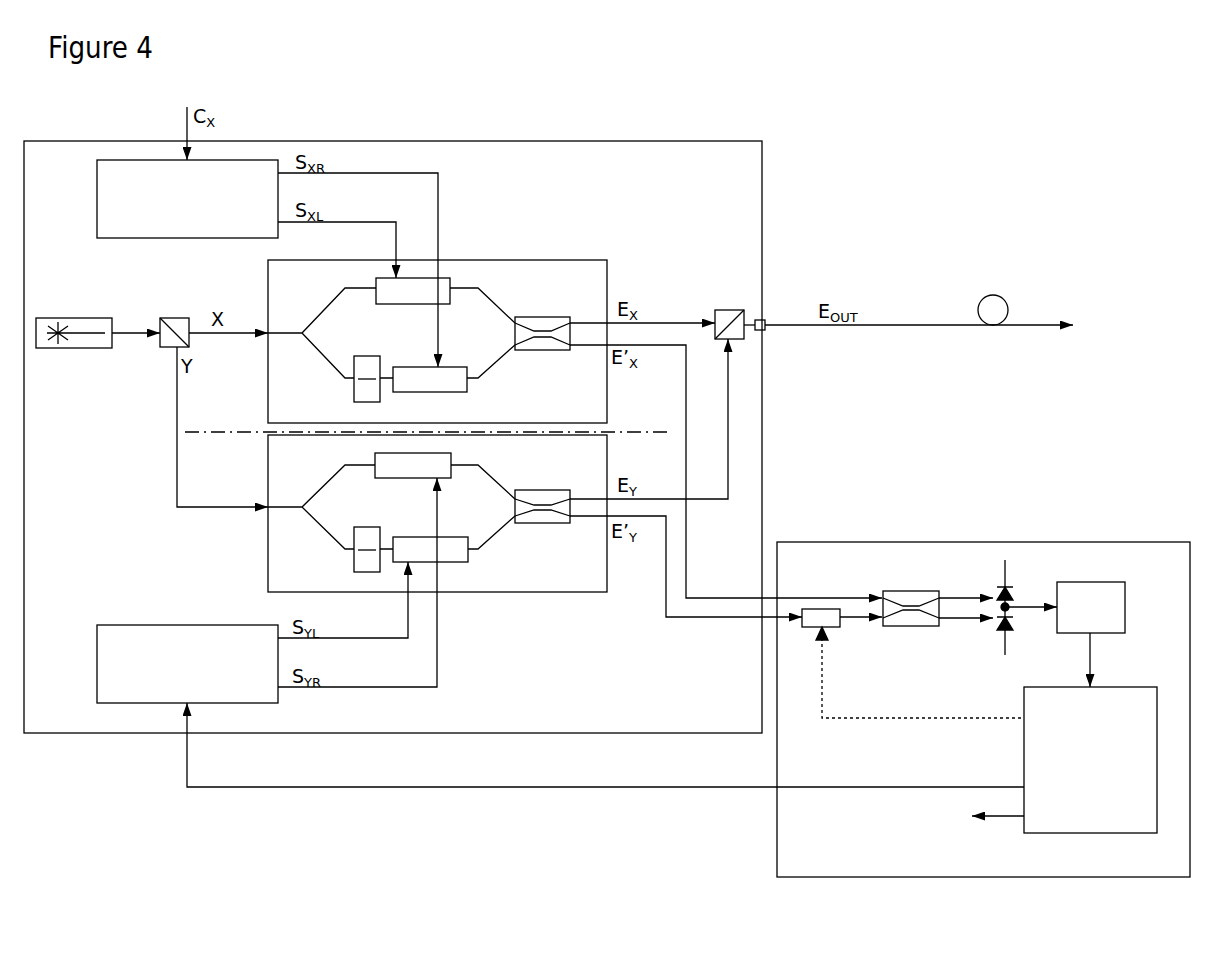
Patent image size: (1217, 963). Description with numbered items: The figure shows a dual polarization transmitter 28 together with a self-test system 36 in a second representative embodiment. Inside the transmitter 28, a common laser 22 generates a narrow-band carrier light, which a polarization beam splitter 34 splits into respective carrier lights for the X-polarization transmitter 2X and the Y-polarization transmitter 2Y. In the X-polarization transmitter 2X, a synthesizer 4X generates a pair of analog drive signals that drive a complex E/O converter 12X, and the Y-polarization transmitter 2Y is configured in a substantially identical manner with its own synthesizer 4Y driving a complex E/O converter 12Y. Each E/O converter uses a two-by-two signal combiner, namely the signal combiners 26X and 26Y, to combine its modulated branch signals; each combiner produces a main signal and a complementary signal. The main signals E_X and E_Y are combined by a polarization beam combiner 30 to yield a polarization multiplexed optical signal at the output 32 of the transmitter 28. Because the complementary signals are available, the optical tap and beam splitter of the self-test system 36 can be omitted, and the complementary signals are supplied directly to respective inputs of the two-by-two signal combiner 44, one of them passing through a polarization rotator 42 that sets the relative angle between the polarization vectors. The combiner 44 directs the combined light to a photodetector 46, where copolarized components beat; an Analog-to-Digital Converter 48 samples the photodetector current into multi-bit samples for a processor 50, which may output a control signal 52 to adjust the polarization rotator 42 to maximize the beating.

The X-polarization transmitter 2X is at (640, 196).
The Y-polarization transmitter 2Y is at (649, 654).
The synthesizer 4X is at (187, 199).
The synthesizer 4Y is at (187, 664).
The complex E/O converter 12X is at (437, 322).
The complex E/O converter 12Y is at (437, 534).
The laser 22 is at (72, 318).
The 2×2 signal combiner 26X is at (539, 317).
The 2×2 signal combiner 26Y is at (539, 490).
The dual polarization transmitter 28 is at (628, 141).
The polarization beam combiner 30 is at (728, 310).
The output 32 is at (763, 330).
The polarization beam splitter 34 is at (177, 318).
The self-test system 36 is at (1090, 542).
The polarization rotator 42 is at (837, 627).
The 2×2 signal combiner 44 is at (912, 591).
The photodetector 46 is at (1023, 582).
The Analog-to-Digital Converter 48 is at (1119, 582).
The processor 50 is at (1090, 760).
The control signal 52 is at (911, 718).